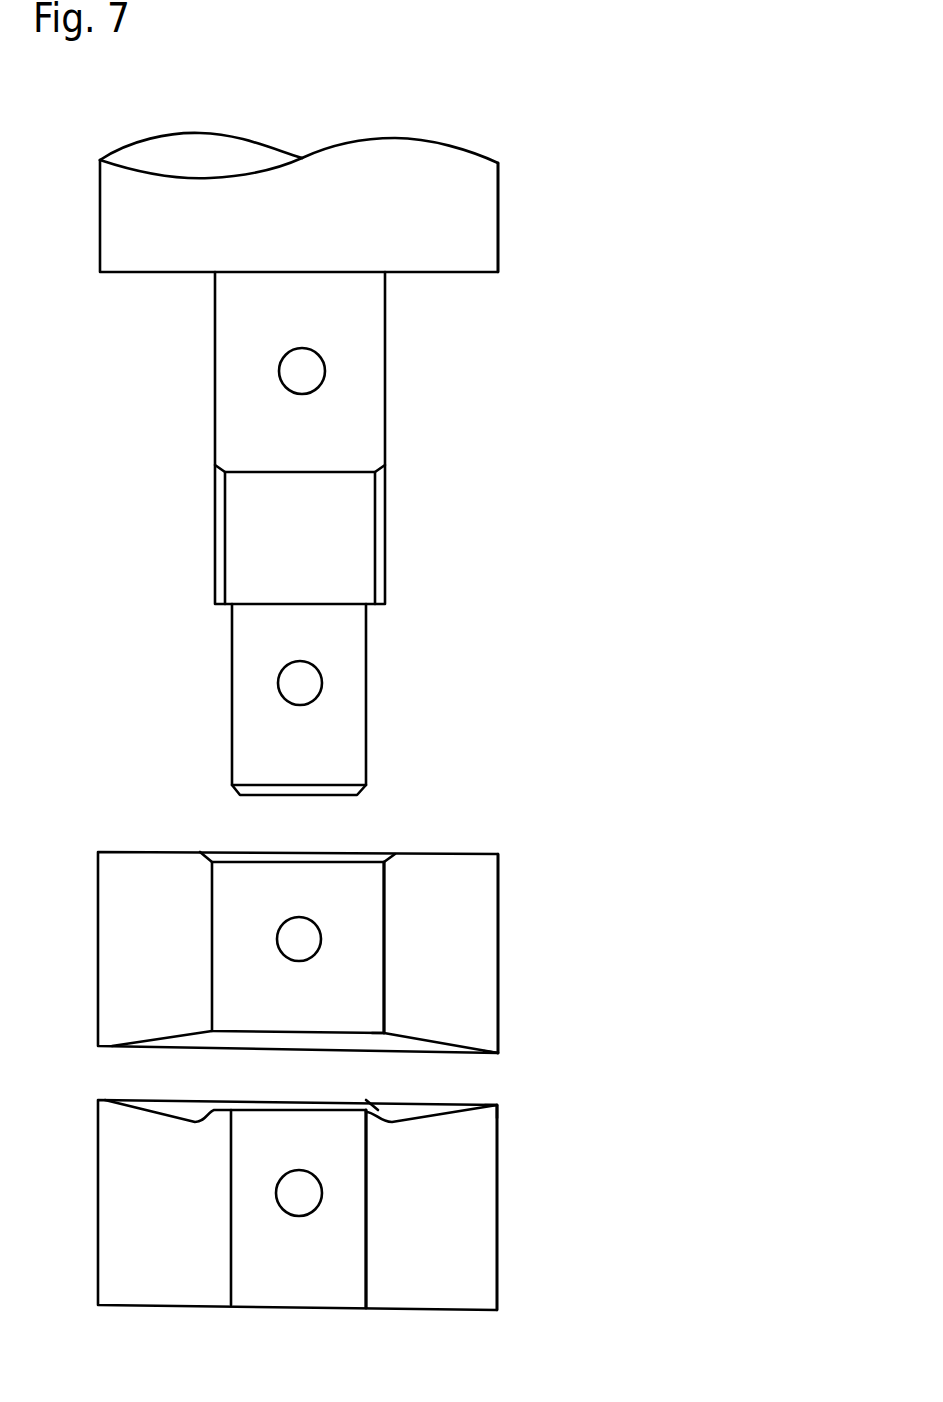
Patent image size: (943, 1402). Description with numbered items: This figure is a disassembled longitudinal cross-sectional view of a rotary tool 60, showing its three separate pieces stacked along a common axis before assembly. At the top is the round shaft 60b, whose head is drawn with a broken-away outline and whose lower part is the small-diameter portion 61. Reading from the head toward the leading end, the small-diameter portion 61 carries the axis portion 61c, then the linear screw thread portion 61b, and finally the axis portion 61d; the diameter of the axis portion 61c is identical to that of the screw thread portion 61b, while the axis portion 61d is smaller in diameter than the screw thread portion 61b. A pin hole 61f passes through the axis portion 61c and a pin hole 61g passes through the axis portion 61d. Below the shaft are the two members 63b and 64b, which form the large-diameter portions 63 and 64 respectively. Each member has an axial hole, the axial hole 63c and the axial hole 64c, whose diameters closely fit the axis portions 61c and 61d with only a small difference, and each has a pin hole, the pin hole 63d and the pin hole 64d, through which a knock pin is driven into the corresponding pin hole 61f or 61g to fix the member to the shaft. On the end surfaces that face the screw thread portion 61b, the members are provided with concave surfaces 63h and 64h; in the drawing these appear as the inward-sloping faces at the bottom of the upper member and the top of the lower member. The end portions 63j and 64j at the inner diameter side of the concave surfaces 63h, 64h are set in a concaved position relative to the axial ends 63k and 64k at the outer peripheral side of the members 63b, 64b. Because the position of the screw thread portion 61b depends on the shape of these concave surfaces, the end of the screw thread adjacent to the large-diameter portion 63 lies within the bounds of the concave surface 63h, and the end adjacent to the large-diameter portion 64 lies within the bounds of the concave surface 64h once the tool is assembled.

The rotary tool 60 is at (550, 171).
The round shaft 60b is at (480, 232).
The small-diameter portion 61 is at (367, 533).
The axis portion 61c is at (375, 322).
The pin hole 61f is at (325, 372).
The screw thread portion 61b is at (385, 545).
The pin hole 61g is at (322, 672).
The axis portion 61d is at (368, 718).
The large-diameter portion 63 is at (390, 975).
The member 63b is at (487, 940).
The axial hole 63c is at (384, 935).
The pin hole 63d is at (318, 928).
The concave surface 63h is at (428, 1042).
The axial end 63k is at (498, 1052).
The end portion 63j is at (384, 1033).
The large-diameter portion 64 is at (370, 1185).
The member 64b is at (487, 1215).
The axial hole 64c is at (366, 1226).
The pin hole 64d is at (318, 1180).
The concave surface 64h is at (420, 1120).
The axial end 64k is at (498, 1103).
The end portion 64j is at (372, 1112).